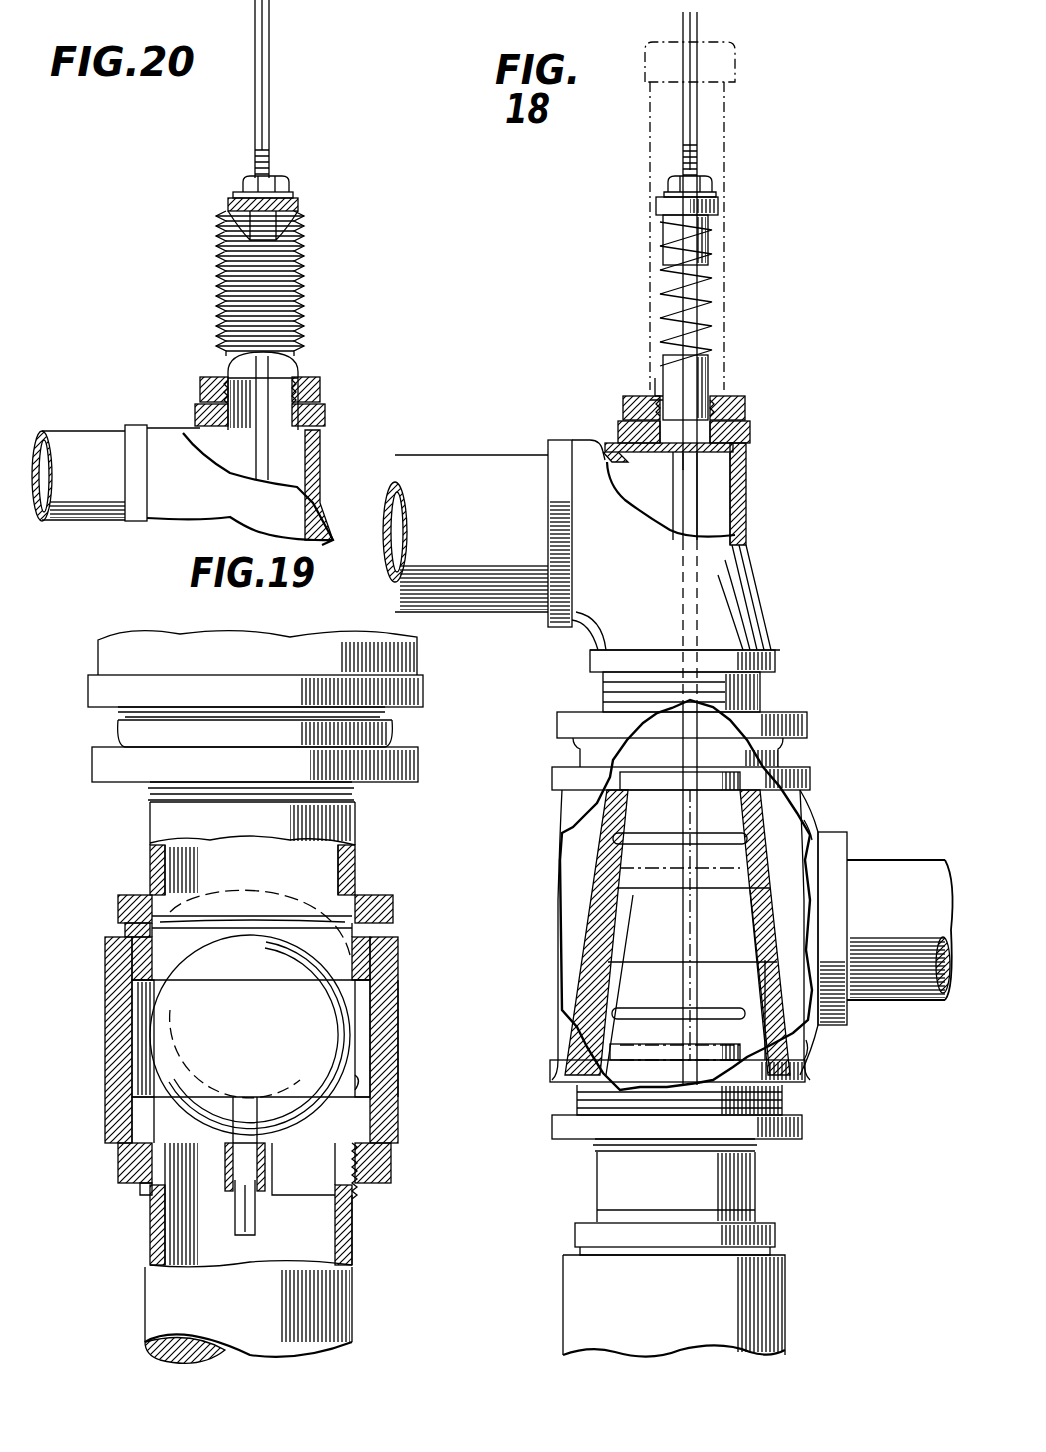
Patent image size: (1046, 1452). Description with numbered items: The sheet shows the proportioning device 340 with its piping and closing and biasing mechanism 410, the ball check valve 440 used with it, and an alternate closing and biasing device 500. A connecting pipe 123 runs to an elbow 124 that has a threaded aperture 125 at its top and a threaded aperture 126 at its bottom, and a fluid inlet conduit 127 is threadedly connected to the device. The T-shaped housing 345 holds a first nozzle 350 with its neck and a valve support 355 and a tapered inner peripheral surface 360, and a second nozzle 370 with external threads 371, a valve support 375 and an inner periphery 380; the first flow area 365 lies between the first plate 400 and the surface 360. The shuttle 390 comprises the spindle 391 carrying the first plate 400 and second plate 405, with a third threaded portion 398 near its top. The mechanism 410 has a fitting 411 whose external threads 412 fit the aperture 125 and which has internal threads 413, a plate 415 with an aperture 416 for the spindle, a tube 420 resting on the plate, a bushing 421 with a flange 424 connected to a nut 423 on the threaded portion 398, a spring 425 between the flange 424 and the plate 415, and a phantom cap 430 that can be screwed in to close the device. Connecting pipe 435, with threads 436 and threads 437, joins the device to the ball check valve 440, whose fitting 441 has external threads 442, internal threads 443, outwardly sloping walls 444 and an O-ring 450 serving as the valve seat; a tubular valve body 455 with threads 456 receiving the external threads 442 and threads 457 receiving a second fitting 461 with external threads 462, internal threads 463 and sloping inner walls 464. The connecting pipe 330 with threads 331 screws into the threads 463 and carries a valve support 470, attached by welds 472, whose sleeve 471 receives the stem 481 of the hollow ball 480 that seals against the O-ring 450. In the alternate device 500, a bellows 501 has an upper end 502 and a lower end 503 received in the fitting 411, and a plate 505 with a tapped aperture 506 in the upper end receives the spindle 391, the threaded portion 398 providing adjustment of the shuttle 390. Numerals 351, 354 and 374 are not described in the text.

In FIG. 20, the connecting pipe 123 is at (78, 440).
In FIG. 18, the connecting pipe 123 is at (456, 470).
In FIG. 20, the elbow 124 is at (165, 498).
In FIG. 18, the elbow 124 is at (578, 626).
In FIG. 20, the threaded aperture 125 is at (326, 413).
In FIG. 18, the threaded aperture 125 is at (752, 421).
In FIG. 18, the threaded aperture 126 is at (780, 661).
In FIG. 18, the fluid inlet conduit 127 is at (906, 868).
In FIG. 19, the connecting pipe 330 is at (320, 1323).
In FIG. 18, the connecting pipe 330 is at (586, 1291).
In FIG. 19, the threads 331 is at (356, 1199).
In FIG. 18, the proportioning device 340 is at (552, 750).
In FIG. 19, the T-shaped housing 345 is at (248, 645).
In FIG. 18, the T-shaped housing 345 is at (806, 822).
In FIG. 18, the first nozzle 350 is at (808, 720).
In FIG. 18, the neck 351 is at (785, 756).
In FIG. 18, the side wall 354 is at (566, 916).
In FIG. 18, the valve support 355 is at (610, 786).
In FIG. 18, the tapered inner peripheral surface 360 is at (603, 858).
In FIG. 18, the first flow area 365 is at (610, 828).
In FIG. 19, the second nozzle 370 is at (105, 762).
In FIG. 18, the second nozzle 370 is at (803, 1130).
In FIG. 19, the external threads 371 is at (118, 714).
In FIG. 18, the external threads 371 is at (782, 1099).
In FIG. 18, the inner wall 374 is at (773, 988).
In FIG. 18, the valve support 375 is at (637, 1073).
In FIG. 18, the inner periphery 380 is at (598, 976).
In FIG. 18, the shuttle 390 is at (700, 928).
In FIG. 20, the spindle 391 is at (269, 78).
In FIG. 18, the spindle 391 is at (698, 28).
In FIG. 20, the third threaded portion 398 is at (270, 158).
In FIG. 18, the third threaded portion 398 is at (698, 150).
In FIG. 18, the first plate 400 is at (701, 833).
In FIG. 18, the second plate 405 is at (710, 1008).
In FIG. 18, the closing and biasing mechanism 410 is at (748, 186).
In FIG. 20, the fitting 411 is at (321, 386).
In FIG. 18, the fitting 411 is at (746, 403).
In FIG. 20, the external threads 412 is at (203, 393).
In FIG. 18, the external threads 412 is at (623, 411).
In FIG. 18, the internal threads 413 is at (655, 391).
In FIG. 18, the plate 415 is at (718, 460).
In FIG. 18, the aperture 416 is at (680, 458).
In FIG. 18, the tube 420 is at (710, 381).
In FIG. 18, the bushing 421 is at (710, 241).
In FIG. 20, the nut 423 is at (243, 184).
In FIG. 18, the nut 423 is at (668, 184).
In FIG. 18, the flange 424 is at (660, 207).
In FIG. 18, the spring 425 is at (662, 298).
In FIG. 18, the cap 430 is at (738, 63).
In FIG. 19, the connecting pipe 435 is at (340, 832).
In FIG. 18, the connecting pipe 435 is at (740, 1188).
In FIG. 19, the threads 436 is at (150, 793).
In FIG. 18, the threads 436 is at (760, 1148).
In FIG. 19, the threads 437 is at (152, 876).
In FIG. 18, the threads 437 is at (597, 1213).
In FIG. 19, the ball check valve 440 is at (392, 927).
In FIG. 19, the fitting 441 is at (118, 906).
In FIG. 18, the fitting 441 is at (777, 1238).
In FIG. 19, the external threads 442 is at (125, 930).
In FIG. 19, the internal threads 443 is at (360, 894).
In FIG. 19, the outwardly sloping walls 444 is at (140, 985).
In FIG. 19, the O-ring 450 is at (200, 930).
In FIG. 19, the valve body 455 is at (392, 1038).
In FIG. 19, the threads 456 is at (378, 992).
In FIG. 19, the threads 457 is at (378, 1086).
In FIG. 19, the second fitting 461 is at (392, 1166).
In FIG. 19, the external threads 462 is at (120, 1150).
In FIG. 19, the internal threads 463 is at (148, 1192).
In FIG. 19, the outwardly sloping inner walls 464 is at (148, 1100).
In FIG. 19, the valve support 470 is at (306, 1187).
In FIG. 19, the sleeve 471 is at (222, 1182).
In FIG. 19, the welds 472 is at (345, 1212).
In FIG. 19, the ball 480 is at (148, 1040).
In FIG. 19, the stem 481 is at (242, 1236).
In FIG. 20, the closing and biasing device 500 is at (320, 268).
In FIG. 20, the bellows 501 is at (218, 282).
In FIG. 20, the upper end 502 is at (299, 207).
In FIG. 20, the lower end 503 is at (300, 378).
In FIG. 20, the plate 505 is at (294, 195).
In FIG. 20, the tapped aperture 506 is at (233, 216).